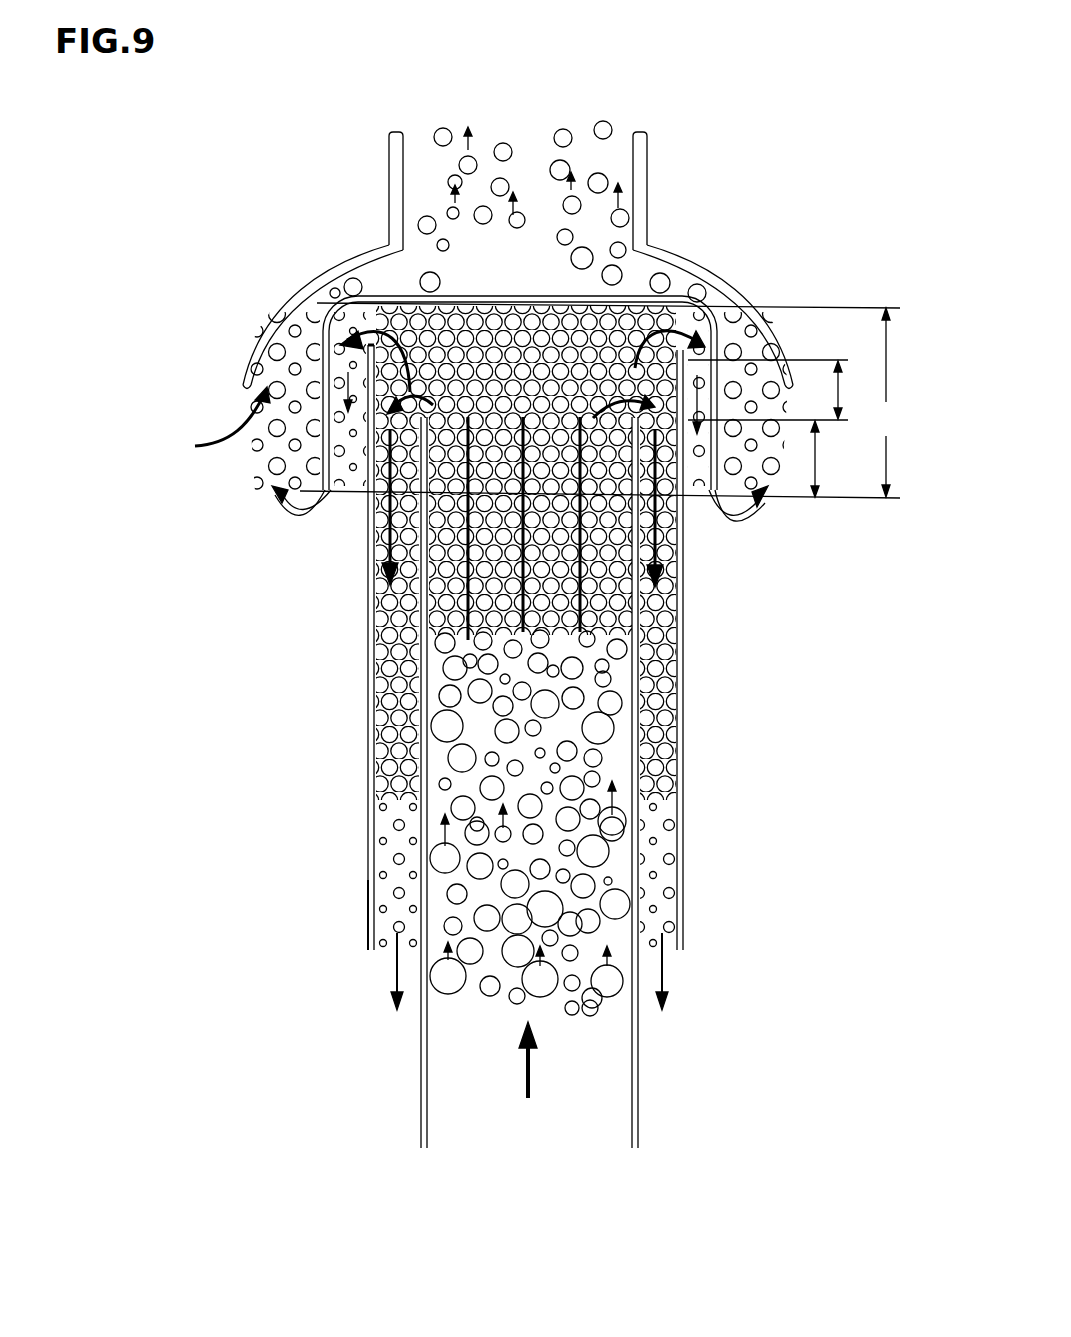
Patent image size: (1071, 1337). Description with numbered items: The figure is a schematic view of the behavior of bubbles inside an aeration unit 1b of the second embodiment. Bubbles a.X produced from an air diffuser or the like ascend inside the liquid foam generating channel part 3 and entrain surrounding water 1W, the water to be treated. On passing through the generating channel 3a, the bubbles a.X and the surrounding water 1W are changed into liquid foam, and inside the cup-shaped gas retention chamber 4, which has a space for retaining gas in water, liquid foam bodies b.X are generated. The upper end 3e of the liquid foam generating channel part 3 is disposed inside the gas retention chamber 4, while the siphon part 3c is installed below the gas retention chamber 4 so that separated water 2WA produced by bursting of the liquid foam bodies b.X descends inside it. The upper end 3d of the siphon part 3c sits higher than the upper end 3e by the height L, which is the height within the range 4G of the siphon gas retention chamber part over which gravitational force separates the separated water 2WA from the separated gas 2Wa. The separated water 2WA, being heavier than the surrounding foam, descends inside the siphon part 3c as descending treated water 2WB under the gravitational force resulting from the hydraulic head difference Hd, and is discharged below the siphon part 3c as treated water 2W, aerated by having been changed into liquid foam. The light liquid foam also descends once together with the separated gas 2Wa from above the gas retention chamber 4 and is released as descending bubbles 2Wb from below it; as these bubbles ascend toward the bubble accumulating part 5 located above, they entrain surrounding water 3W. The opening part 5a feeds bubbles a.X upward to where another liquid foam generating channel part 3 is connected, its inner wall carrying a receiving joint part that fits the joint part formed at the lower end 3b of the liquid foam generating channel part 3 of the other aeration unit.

The aeration unit 1b is at (247, 182).
The opening part 5a is at (403, 153).
The bubble accumulating part 5 is at (733, 288).
The gas retention chamber 4 is at (325, 352).
The liquid foam generating channel part 3 is at (373, 740).
The generating channel 3a is at (465, 597).
The lower end of the liquid foam generating channel part 3b is at (641, 1105).
The siphon part 3c is at (369, 880).
The upper end of the siphon part 3d is at (367, 349).
The upper end of the liquid foam generating channel part 3e is at (415, 410).
The surrounding water 3W is at (220, 432).
The liquid foam bodies b.X is at (445, 335).
The bubbles a.X is at (604, 843).
The separated water 2WA is at (617, 393).
The separated gas 2Wa is at (670, 320).
The descending treated water 2WB is at (665, 555).
The descending bubbles 2Wb is at (745, 520).
The treated water 2W is at (530, 992).
The surrounding water 1W is at (534, 1082).
The height L is at (834, 390).
The hydraulic head difference Hd is at (814, 459).
The range of the siphon gas retention chamber part 4G is at (885, 402).